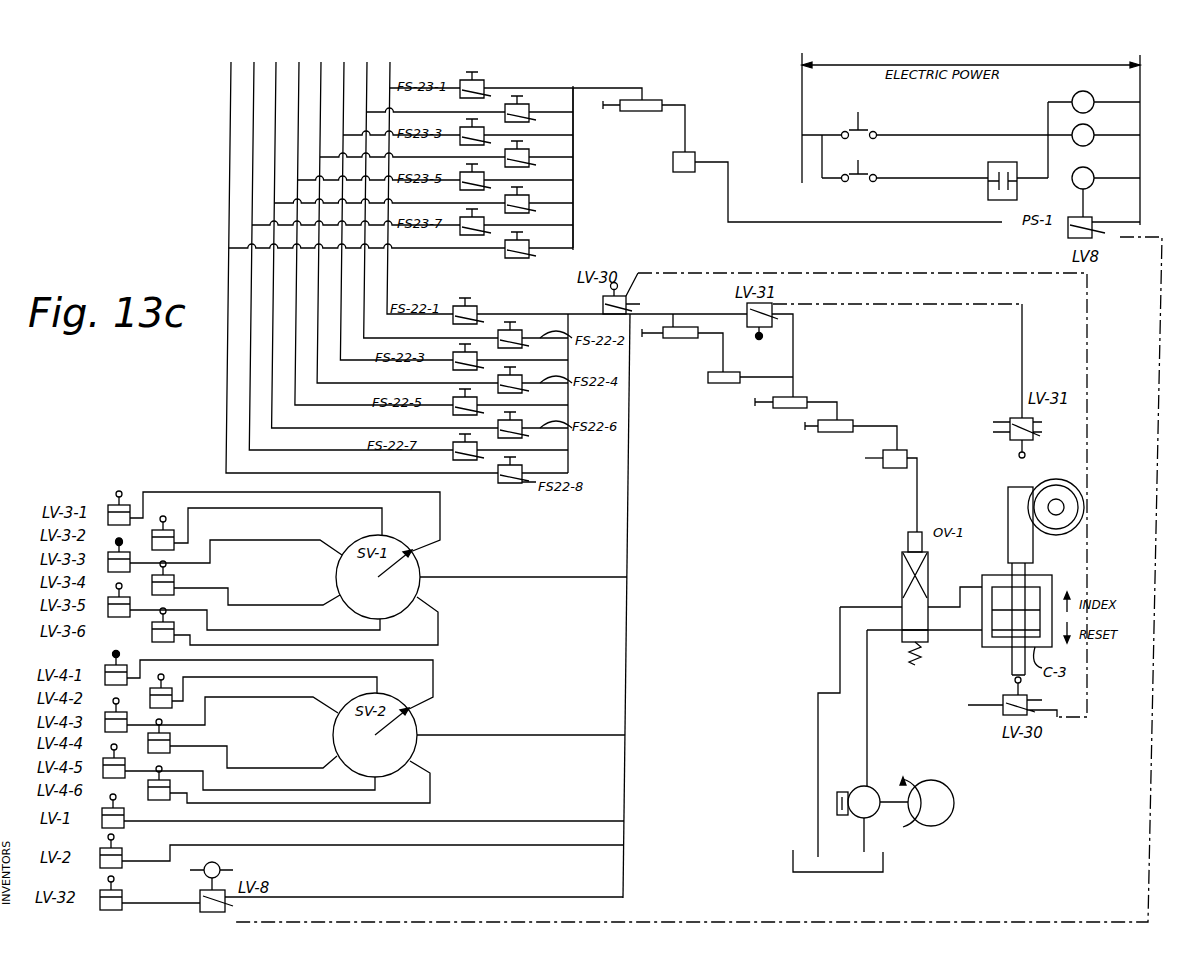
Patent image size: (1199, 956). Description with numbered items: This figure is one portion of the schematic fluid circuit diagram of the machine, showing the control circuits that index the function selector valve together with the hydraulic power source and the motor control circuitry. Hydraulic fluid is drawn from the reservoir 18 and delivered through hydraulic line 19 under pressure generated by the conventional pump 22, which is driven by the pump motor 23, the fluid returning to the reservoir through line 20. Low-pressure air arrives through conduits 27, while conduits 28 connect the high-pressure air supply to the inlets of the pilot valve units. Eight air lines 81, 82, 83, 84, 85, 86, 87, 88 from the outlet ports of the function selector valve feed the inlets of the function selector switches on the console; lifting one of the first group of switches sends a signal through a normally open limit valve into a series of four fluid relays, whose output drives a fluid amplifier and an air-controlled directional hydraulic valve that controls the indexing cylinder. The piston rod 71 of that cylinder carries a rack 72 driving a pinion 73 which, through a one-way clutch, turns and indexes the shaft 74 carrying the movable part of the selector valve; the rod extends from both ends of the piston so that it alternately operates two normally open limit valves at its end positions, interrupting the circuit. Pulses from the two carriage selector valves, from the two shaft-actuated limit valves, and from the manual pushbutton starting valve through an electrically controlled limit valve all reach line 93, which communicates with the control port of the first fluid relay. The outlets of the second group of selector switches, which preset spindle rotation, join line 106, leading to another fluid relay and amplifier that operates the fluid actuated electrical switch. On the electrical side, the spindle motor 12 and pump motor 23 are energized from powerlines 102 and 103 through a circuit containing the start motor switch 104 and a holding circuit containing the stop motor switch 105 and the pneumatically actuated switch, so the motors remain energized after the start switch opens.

The air line 81 is at (396, 81).
The air line 82 is at (368, 78).
The air line 83 is at (345, 83).
The air line 84 is at (322, 83).
The air line 85 is at (300, 83).
The air line 86 is at (277, 83).
The air line 87 is at (254, 85).
The air line 88 is at (231, 103).
The low-pressure air line 27 is at (805, 460).
The conduits 28 is at (851, 486).
The line 106 is at (573, 192).
The line 93 is at (631, 552).
The powerline 102 is at (802, 108).
The powerline 103 is at (1140, 170).
The start motor switch 104 is at (870, 126).
The stop motor switch 105 is at (877, 190).
The spindle motor 12 is at (1079, 92).
The pump motor 23 is at (954, 803).
The piston rod 71 is at (1027, 572).
The rack 72 is at (1035, 543).
The pinion 73 is at (1072, 515).
The shaft 74 is at (1060, 502).
The reservoir 18 is at (793, 851).
The hydraulic line 19 is at (867, 742).
The return line 20 is at (818, 749).
The pump 22 is at (873, 815).